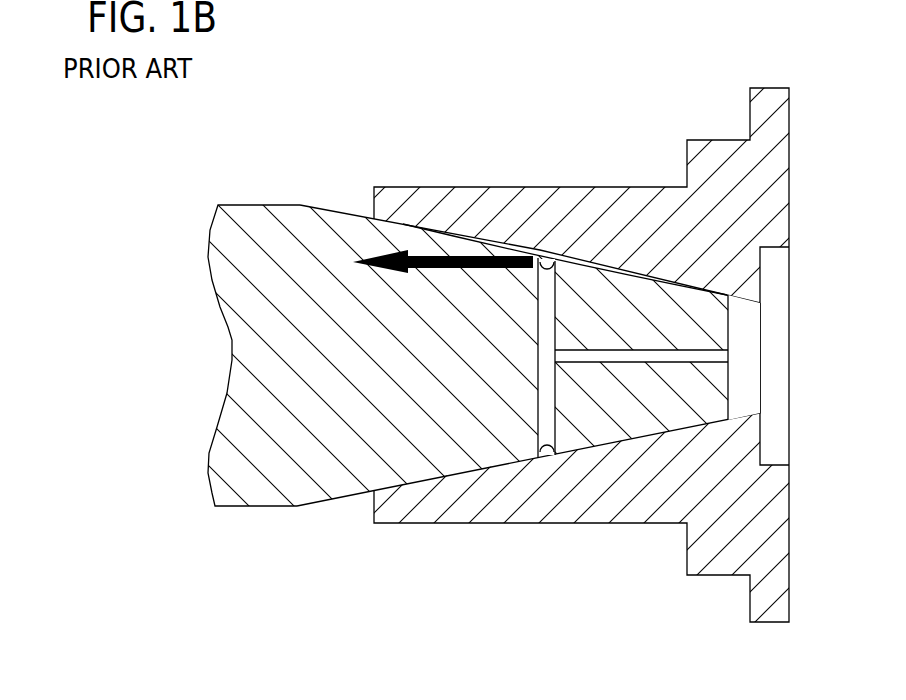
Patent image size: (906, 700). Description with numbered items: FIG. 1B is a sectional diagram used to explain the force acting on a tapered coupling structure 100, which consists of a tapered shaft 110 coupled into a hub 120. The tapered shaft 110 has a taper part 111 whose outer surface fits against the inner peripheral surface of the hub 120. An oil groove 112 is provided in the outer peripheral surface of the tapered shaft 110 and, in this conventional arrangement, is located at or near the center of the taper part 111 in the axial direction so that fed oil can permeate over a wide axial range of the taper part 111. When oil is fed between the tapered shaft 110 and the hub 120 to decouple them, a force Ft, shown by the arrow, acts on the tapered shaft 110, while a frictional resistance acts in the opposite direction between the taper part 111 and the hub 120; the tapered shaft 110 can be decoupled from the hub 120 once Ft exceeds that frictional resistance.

The coupling structure 100 is at (365, 128).
The tapered shaft 110 is at (485, 350).
The taper part 111 is at (438, 452).
The oil groove 112 is at (545, 452).
The hub 120 is at (532, 187).